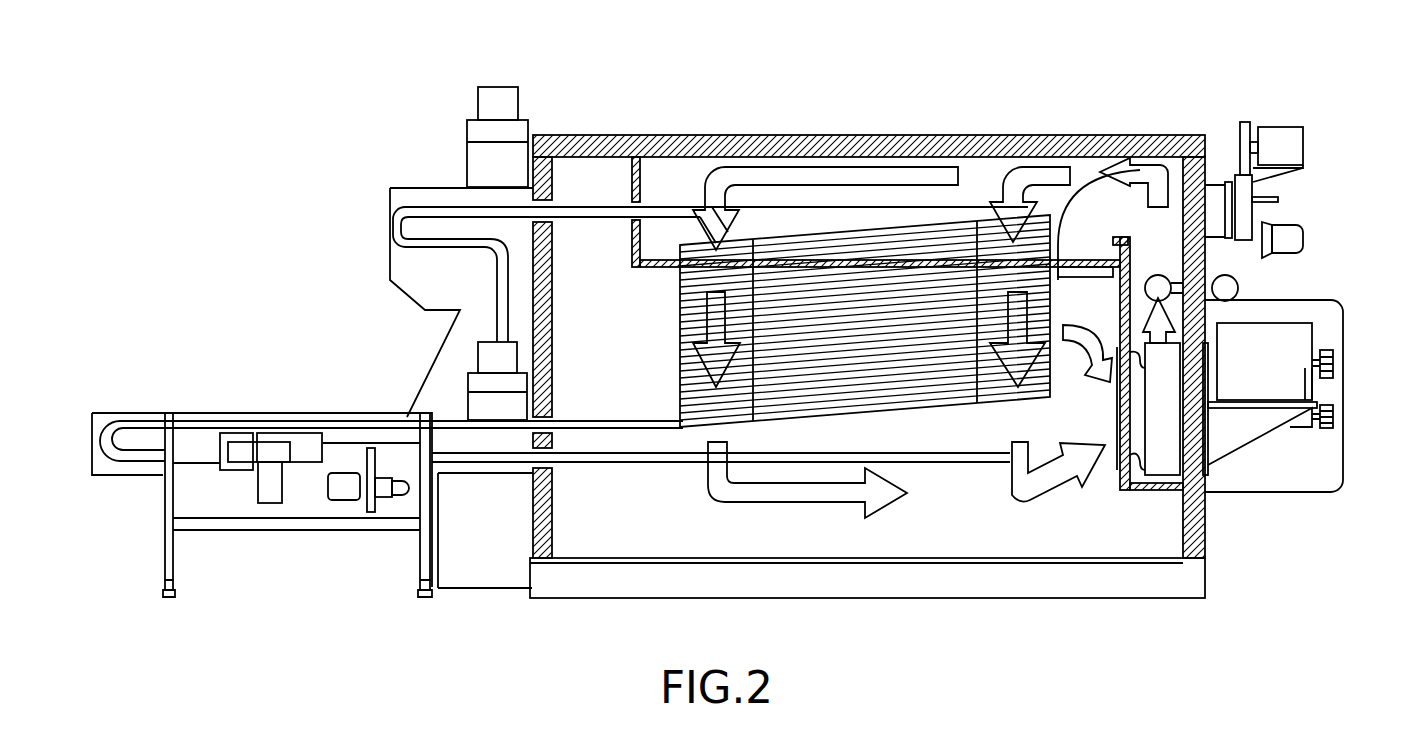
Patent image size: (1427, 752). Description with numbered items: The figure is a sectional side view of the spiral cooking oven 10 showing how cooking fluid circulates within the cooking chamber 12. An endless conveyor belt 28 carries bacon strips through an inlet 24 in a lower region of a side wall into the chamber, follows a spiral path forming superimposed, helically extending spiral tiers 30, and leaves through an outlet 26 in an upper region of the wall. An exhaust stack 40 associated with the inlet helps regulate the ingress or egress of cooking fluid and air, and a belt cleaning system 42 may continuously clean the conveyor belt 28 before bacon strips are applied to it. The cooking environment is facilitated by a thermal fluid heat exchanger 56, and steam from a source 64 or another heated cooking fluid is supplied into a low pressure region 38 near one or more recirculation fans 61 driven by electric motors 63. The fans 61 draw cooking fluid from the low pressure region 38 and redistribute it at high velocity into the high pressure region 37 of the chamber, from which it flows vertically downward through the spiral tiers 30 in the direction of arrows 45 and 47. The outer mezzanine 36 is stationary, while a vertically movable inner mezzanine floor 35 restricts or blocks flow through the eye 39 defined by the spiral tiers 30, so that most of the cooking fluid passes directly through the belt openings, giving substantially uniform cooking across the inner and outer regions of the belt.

The spiral cooking oven 10 is at (680, 108).
The cooking chamber 12 is at (645, 537).
The inlet 24 is at (555, 412).
The outlet 26 is at (557, 222).
The conveyor belt 28 is at (235, 415).
The spiral tiers 30 is at (672, 330).
The inner mezzanine floor 35 is at (830, 262).
The outer mezzanine 36 is at (660, 265).
The high pressure region 37 is at (978, 185).
The low pressure region 38 is at (1035, 538).
The eye 39 is at (485, 165).
The exhaust stack 40 is at (482, 407).
The belt cleaning system 42 is at (285, 540).
The arrow 45 is at (718, 200).
The arrow 47 is at (1045, 172).
The thermal fluid heat exchanger 56 is at (1283, 127).
The recirculation fan 61 is at (1165, 452).
The electric motor 63 is at (1320, 330).
The steam source 64 is at (1150, 290).